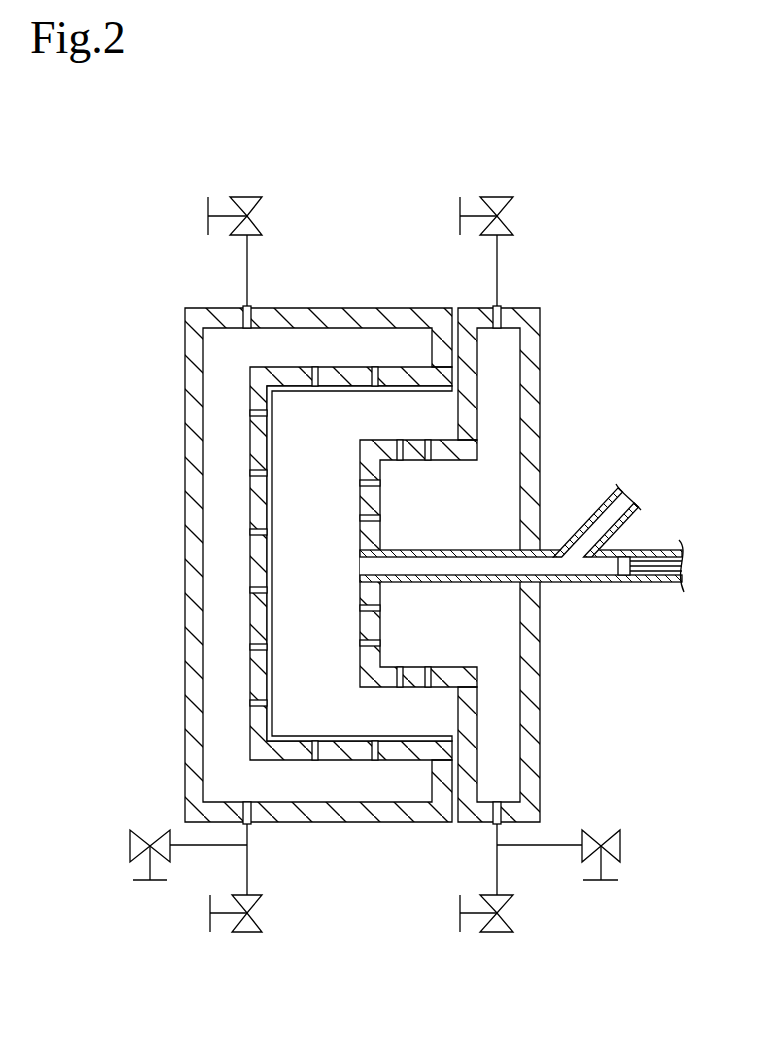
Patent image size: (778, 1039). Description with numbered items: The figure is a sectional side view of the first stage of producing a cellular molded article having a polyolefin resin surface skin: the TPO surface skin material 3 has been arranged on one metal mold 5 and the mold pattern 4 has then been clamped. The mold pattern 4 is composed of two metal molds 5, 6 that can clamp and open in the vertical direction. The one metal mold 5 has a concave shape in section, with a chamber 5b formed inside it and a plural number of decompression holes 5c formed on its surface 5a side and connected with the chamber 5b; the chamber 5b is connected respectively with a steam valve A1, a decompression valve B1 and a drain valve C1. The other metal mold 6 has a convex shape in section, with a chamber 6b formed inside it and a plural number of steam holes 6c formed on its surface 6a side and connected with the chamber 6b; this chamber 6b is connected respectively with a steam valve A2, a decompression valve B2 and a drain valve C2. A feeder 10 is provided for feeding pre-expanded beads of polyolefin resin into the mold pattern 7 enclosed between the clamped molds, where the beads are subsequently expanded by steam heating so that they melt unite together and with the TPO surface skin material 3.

The TPO surface skin material 3 is at (270, 437).
The mold pattern 4 is at (443, 236).
The one metal mold 5 is at (278, 531).
The surface 5a is at (266, 549).
The chamber 5b is at (217, 679).
The decompression holes 5c is at (248, 478).
The other metal mold 6 is at (459, 531).
The surface 6a is at (362, 595).
The chamber 6b is at (500, 637).
The steam holes 6c is at (378, 496).
The mold pattern cavity 7 is at (329, 501).
The feeder 10 is at (646, 592).
The steam valve A1 is at (247, 197).
The steam valve A2 is at (497, 197).
The decompression valve B1 is at (130, 847).
The decompression valve B2 is at (620, 846).
The drain valve C1 is at (252, 932).
The drain valve C2 is at (500, 932).